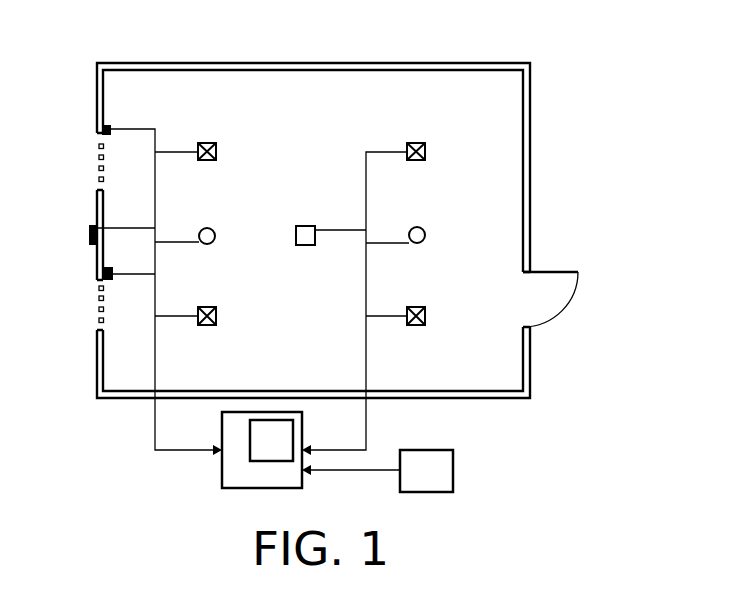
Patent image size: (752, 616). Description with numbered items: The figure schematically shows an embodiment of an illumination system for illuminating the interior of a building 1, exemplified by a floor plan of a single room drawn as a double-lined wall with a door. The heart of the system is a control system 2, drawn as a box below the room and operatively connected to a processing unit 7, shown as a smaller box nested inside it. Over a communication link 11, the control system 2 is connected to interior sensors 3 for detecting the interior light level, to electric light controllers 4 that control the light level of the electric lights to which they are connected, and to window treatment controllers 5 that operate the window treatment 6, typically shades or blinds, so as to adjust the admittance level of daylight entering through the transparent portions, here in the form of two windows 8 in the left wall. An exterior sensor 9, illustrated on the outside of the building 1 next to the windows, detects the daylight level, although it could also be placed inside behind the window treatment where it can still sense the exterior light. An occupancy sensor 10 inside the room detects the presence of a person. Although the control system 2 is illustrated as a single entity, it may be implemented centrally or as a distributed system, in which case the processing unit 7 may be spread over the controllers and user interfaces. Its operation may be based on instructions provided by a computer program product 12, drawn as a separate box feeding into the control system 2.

The building 1 is at (560, 78).
The control system 2 is at (243, 478).
The interior sensor 3 is at (214, 230).
The electric light controller 4 is at (216, 143).
The window treatment controller 5 is at (105, 124).
The window treatment 6 is at (97, 147).
The processing unit 7 is at (279, 454).
The window 8 is at (86, 300).
The exterior sensor 9 is at (89, 230).
The occupancy sensor 10 is at (310, 225).
The communication link 11 is at (158, 372).
The computer program product 12 is at (442, 489).